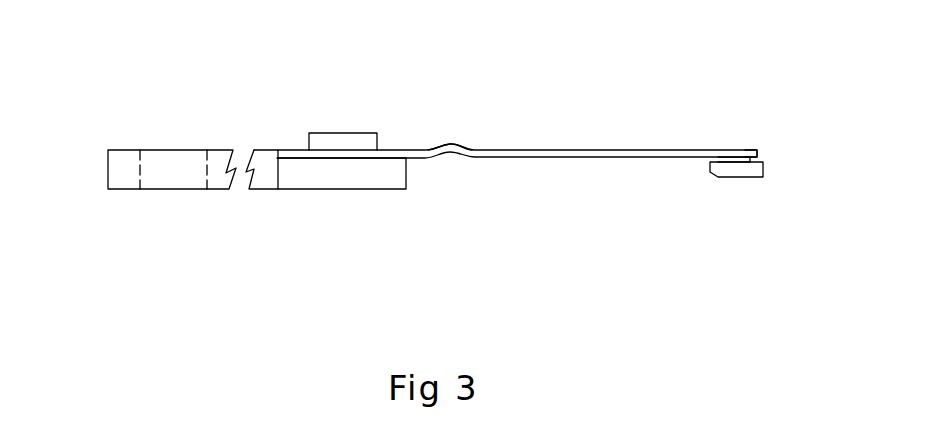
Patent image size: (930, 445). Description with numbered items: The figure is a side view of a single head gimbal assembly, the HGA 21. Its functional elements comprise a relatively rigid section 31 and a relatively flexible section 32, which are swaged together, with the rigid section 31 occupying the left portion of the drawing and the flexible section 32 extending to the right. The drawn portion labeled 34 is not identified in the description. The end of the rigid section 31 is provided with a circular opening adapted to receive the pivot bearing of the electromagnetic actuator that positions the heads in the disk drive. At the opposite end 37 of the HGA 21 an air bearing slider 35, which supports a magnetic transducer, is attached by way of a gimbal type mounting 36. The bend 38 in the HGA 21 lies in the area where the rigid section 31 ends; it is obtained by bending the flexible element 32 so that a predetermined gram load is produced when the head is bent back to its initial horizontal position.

The HGA 21 is at (415, 298).
The relatively rigid section 31 is at (304, 190).
The relatively flexible section 32 is at (653, 150).
The mounting arm 34 is at (165, 150).
The air bearing slider 35 is at (747, 180).
The gimbal type mounting 36 is at (763, 163).
The end 37 is at (740, 150).
The bend 38 is at (450, 143).